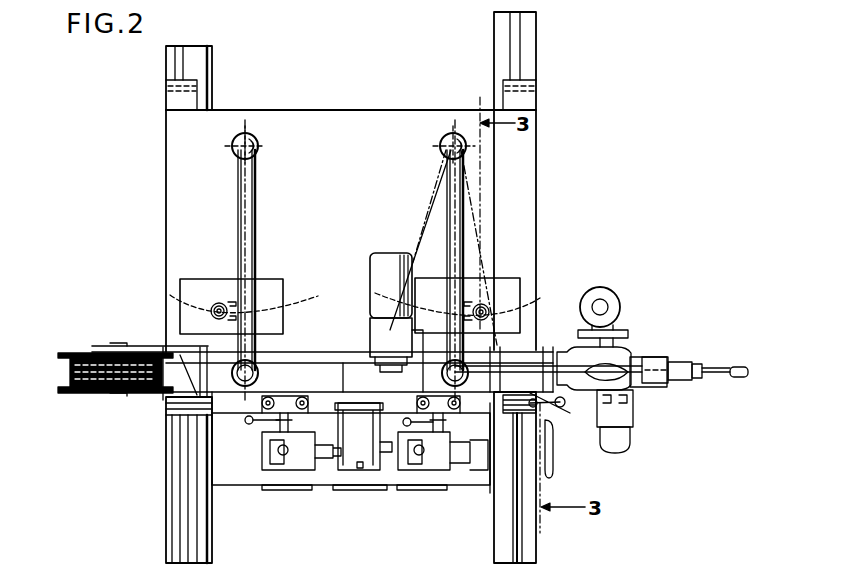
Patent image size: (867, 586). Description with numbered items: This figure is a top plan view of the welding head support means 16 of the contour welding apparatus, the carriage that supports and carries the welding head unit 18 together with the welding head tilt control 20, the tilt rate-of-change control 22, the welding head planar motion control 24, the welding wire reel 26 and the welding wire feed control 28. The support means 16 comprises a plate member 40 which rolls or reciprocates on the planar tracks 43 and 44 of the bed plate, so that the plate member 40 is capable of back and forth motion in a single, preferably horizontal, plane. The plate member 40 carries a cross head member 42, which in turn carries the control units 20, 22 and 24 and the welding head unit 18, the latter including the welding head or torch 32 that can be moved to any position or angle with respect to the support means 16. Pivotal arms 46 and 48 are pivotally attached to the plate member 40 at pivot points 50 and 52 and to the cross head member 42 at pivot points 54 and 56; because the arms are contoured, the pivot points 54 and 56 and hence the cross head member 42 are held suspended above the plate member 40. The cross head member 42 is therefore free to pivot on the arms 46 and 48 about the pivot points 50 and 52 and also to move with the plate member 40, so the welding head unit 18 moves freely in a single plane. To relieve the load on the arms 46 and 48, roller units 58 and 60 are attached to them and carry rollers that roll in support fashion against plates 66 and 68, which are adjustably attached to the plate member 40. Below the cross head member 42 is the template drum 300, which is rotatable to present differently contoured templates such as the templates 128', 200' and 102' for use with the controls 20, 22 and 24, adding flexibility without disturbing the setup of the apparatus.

The welding head support means 16 is at (556, 140).
The welding head unit 18 is at (628, 318).
The welding head tilt control 20 is at (457, 473).
The welding head tilt rate-of-change control 22 is at (288, 473).
The welding head planar motion control 24 is at (360, 473).
The welding wire reel 26 is at (73, 355).
The welding wire feed control 28 is at (373, 260).
The welding head or torch 32 is at (712, 370).
The plate member 40 is at (525, 193).
The cross head member 42 is at (340, 358).
The planar track 43 is at (188, 60).
The planar track 44 is at (515, 48).
The pivotal arm 46 is at (240, 202).
The pivotal arm 48 is at (461, 196).
The pivot point 50 is at (250, 138).
The pivot point 52 is at (446, 132).
The pivot point 54 is at (258, 366).
The pivot point 56 is at (452, 378).
The roller unit 58 is at (219, 303).
The roller unit 60 is at (483, 305).
The plate 66 is at (272, 287).
The plate 68 is at (513, 283).
The template drum 300 is at (235, 475).
The template 128' is at (300, 510).
The template 200' is at (378, 518).
The template 102' is at (423, 506).